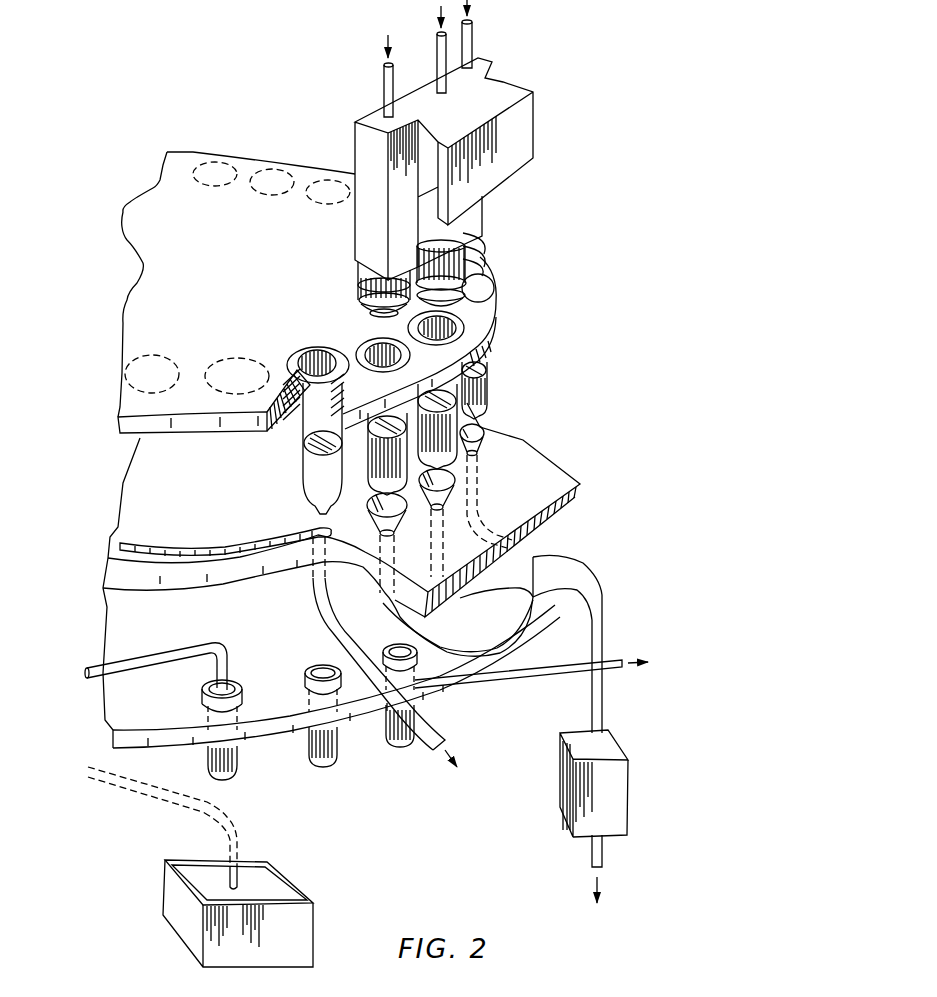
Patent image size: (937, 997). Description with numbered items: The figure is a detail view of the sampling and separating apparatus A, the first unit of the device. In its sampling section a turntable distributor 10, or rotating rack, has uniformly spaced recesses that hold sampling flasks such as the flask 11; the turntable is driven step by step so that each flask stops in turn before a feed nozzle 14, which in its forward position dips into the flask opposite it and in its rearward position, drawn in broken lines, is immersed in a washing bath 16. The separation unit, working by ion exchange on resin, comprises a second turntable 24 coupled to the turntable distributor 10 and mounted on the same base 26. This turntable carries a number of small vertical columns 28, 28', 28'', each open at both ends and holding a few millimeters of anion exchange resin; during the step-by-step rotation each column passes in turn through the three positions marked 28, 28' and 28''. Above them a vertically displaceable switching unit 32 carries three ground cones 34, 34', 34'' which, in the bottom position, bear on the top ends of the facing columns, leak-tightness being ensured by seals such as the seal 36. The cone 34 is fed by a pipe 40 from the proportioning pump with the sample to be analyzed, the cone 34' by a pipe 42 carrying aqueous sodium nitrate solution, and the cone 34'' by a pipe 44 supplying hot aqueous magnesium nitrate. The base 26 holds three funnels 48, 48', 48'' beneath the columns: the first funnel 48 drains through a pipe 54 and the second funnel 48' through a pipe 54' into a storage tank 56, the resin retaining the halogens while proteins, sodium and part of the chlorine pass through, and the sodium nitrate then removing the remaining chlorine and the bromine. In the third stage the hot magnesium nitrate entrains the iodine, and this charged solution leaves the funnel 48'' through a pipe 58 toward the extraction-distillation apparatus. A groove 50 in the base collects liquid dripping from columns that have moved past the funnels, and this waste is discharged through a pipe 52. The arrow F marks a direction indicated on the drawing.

The turntable distributor 10 is at (277, 678).
The sampling flask 11 is at (320, 672).
The feed nozzle 14 is at (168, 658).
The washing bath 16 is at (290, 891).
The second turntable 24 is at (228, 283).
The base 26 is at (212, 473).
The small column 28 is at (443, 343).
The small column 28' is at (477, 329).
The small column 28'' is at (327, 345).
The switching unit 32 is at (486, 99).
The ground cone 34 is at (498, 233).
The ground cone 34' is at (434, 265).
The ground cone 34'' is at (360, 279).
The seal 36 is at (361, 292).
The pipe 40 is at (473, 40).
The pipe 42 is at (437, 52).
The pipe 44 is at (386, 83).
The funnel 48 is at (498, 486).
The funnel 48' is at (468, 523).
The funnel 48'' is at (407, 543).
The groove 50 is at (211, 547).
The pipe 52 is at (433, 724).
The pipe 54 is at (583, 723).
The pipe 54' is at (521, 612).
The storage tank 56 is at (618, 822).
The pipe 58 is at (526, 663).
The sampling and separating apparatus A is at (554, 311).
The direction arrow F is at (268, 635).